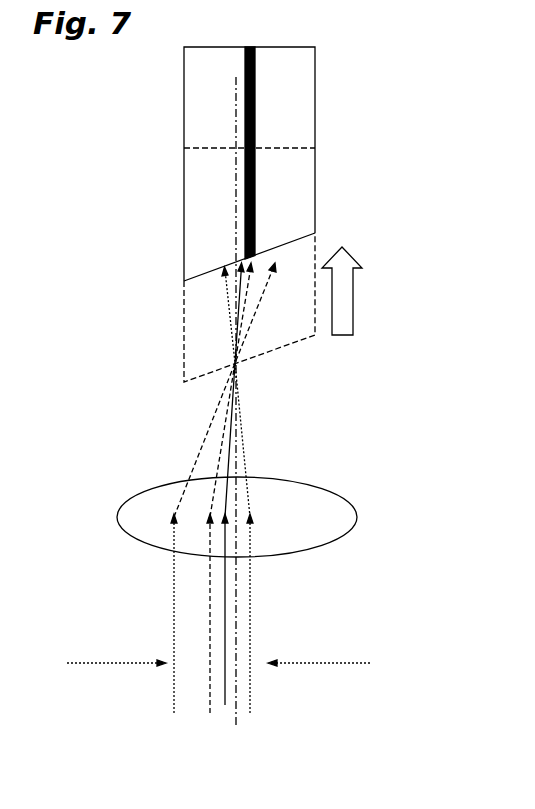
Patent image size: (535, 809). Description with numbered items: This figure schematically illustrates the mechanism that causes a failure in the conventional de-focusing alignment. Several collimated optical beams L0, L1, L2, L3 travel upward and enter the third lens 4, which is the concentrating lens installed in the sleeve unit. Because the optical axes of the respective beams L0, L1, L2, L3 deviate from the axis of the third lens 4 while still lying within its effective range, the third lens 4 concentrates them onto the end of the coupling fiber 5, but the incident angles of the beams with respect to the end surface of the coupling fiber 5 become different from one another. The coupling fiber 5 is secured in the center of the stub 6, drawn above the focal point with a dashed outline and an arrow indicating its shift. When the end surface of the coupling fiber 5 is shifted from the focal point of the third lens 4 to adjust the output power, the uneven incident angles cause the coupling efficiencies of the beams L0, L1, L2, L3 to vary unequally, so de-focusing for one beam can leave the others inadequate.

The third lens 4 is at (340, 516).
The coupling fiber 5 is at (250, 259).
The stub 6 is at (300, 177).
The light beam L0 is at (174, 708).
The light beam L1 is at (252, 708).
The light beam L2 is at (223, 705).
The light beam L3 is at (209, 706).